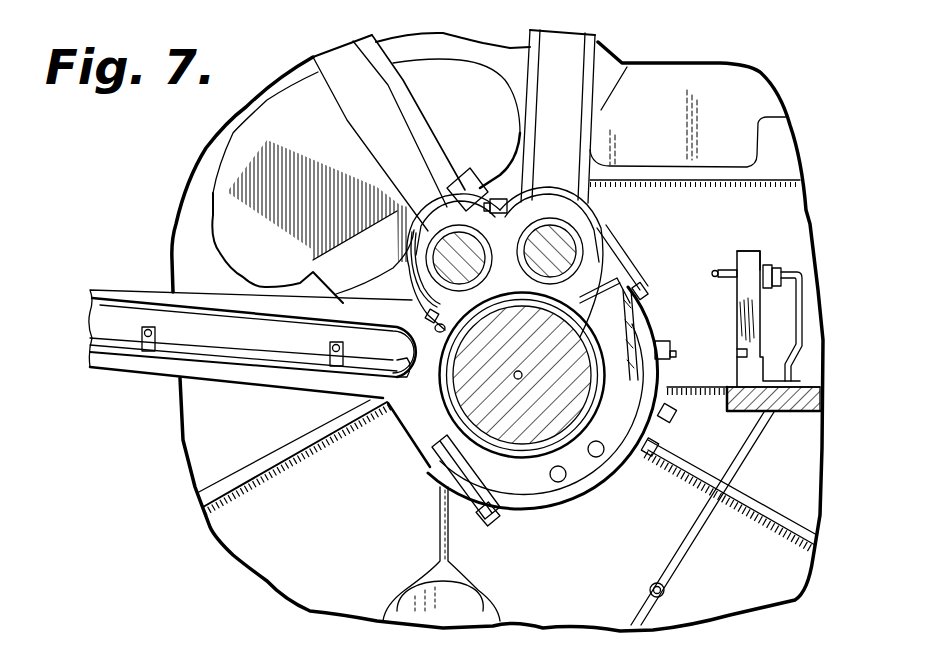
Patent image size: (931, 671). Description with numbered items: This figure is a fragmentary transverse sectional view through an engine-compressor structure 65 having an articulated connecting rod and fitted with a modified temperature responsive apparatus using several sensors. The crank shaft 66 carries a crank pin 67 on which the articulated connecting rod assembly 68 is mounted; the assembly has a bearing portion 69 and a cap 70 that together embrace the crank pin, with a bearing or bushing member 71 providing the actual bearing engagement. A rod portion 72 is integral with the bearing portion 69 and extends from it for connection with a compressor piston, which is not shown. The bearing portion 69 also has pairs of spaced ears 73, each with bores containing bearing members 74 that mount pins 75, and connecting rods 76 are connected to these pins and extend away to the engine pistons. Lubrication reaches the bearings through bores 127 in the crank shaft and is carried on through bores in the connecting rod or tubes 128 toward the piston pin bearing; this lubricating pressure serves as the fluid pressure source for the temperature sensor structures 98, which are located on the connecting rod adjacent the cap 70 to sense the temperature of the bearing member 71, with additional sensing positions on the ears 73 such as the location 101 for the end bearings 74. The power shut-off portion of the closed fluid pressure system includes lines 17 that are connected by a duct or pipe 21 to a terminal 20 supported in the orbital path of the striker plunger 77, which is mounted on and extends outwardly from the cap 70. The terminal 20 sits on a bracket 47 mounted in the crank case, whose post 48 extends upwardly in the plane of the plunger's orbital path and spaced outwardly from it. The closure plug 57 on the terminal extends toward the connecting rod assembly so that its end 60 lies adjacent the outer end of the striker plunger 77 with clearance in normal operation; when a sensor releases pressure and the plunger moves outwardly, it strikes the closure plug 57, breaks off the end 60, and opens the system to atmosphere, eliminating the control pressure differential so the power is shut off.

The engine-compressor structure 65 is at (277, 575).
The connecting rods 76 is at (598, 42).
The crank shaft 66 is at (330, 258).
The rod portion 72 is at (140, 367).
The tubes 128 is at (255, 350).
The bearing portion 69 is at (523, 296).
The crank pin 67 is at (467, 404).
The bores 127 is at (513, 377).
The ears 73 is at (432, 217).
The bearing members 74 is at (568, 222).
The pins 75 is at (567, 244).
The sensor location on ear 101 is at (608, 270).
The temperature sensor structure 98 is at (610, 407).
The striker plunger 77 is at (676, 356).
The cap 70 is at (523, 510).
The bearing member 71 is at (497, 457).
The articulated connecting rod assembly 68 is at (387, 404).
The bracket 47 is at (797, 414).
The post 48 is at (750, 315).
The terminal 20 is at (733, 268).
The closure plug 57 is at (720, 272).
The end of closure plug 60 is at (713, 279).
The duct or pipe 21 is at (682, 565).
The pressure lines 17 is at (664, 592).